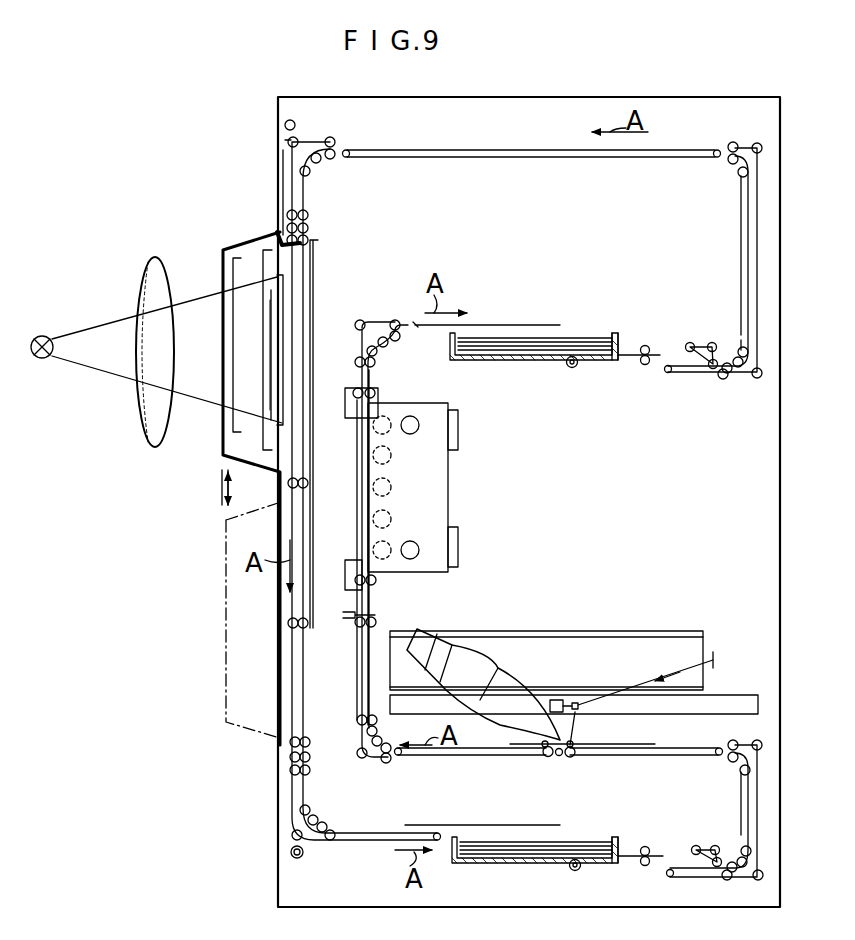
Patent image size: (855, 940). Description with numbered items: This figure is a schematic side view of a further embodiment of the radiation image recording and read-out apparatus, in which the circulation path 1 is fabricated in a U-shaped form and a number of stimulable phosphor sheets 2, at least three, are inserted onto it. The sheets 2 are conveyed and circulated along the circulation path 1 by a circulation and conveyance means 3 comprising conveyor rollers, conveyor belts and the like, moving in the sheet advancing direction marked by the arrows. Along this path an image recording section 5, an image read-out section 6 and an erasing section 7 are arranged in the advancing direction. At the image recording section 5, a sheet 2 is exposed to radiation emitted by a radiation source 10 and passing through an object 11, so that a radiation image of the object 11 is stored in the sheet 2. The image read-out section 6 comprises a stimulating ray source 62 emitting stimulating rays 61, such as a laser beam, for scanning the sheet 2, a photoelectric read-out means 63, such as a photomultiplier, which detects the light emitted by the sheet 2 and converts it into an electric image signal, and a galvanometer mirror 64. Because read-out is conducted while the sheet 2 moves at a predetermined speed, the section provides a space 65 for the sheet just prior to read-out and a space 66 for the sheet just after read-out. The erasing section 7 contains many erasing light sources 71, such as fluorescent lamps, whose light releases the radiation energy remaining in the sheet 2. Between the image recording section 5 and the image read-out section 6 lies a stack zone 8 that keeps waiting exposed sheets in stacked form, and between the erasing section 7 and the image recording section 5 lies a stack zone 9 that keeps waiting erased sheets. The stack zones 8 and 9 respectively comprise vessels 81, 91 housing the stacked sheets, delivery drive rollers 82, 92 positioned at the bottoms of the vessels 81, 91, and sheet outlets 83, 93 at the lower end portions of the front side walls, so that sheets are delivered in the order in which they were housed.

The circulation path 1 is at (442, 143).
The stimulable phosphor sheet 2 is at (293, 376).
The circulation and conveyance means 3 is at (315, 140).
The image recording section 5 is at (218, 264).
The image read-out section 6 is at (540, 682).
The erasing section 7 is at (455, 502).
The stack zone 8 is at (510, 866).
The stack zone 9 is at (530, 370).
The radiation source 10 is at (44, 360).
The object 11 is at (170, 426).
The stimulating rays 61 is at (665, 674).
The stimulating ray source 62 is at (716, 655).
The photoelectric read-out means 63 is at (460, 648).
The galvanometer mirror 64 is at (577, 700).
The space for one sheet 65 is at (680, 749).
The space for one sheet 66 is at (478, 742).
The erasing light source 71 is at (392, 488).
The vessel 81 is at (545, 868).
The delivery drive roller 82 is at (575, 870).
The sheet outlet 83 is at (620, 865).
The vessel 91 is at (598, 362).
The delivery drive roller 92 is at (570, 368).
The sheet outlet 93 is at (620, 362).